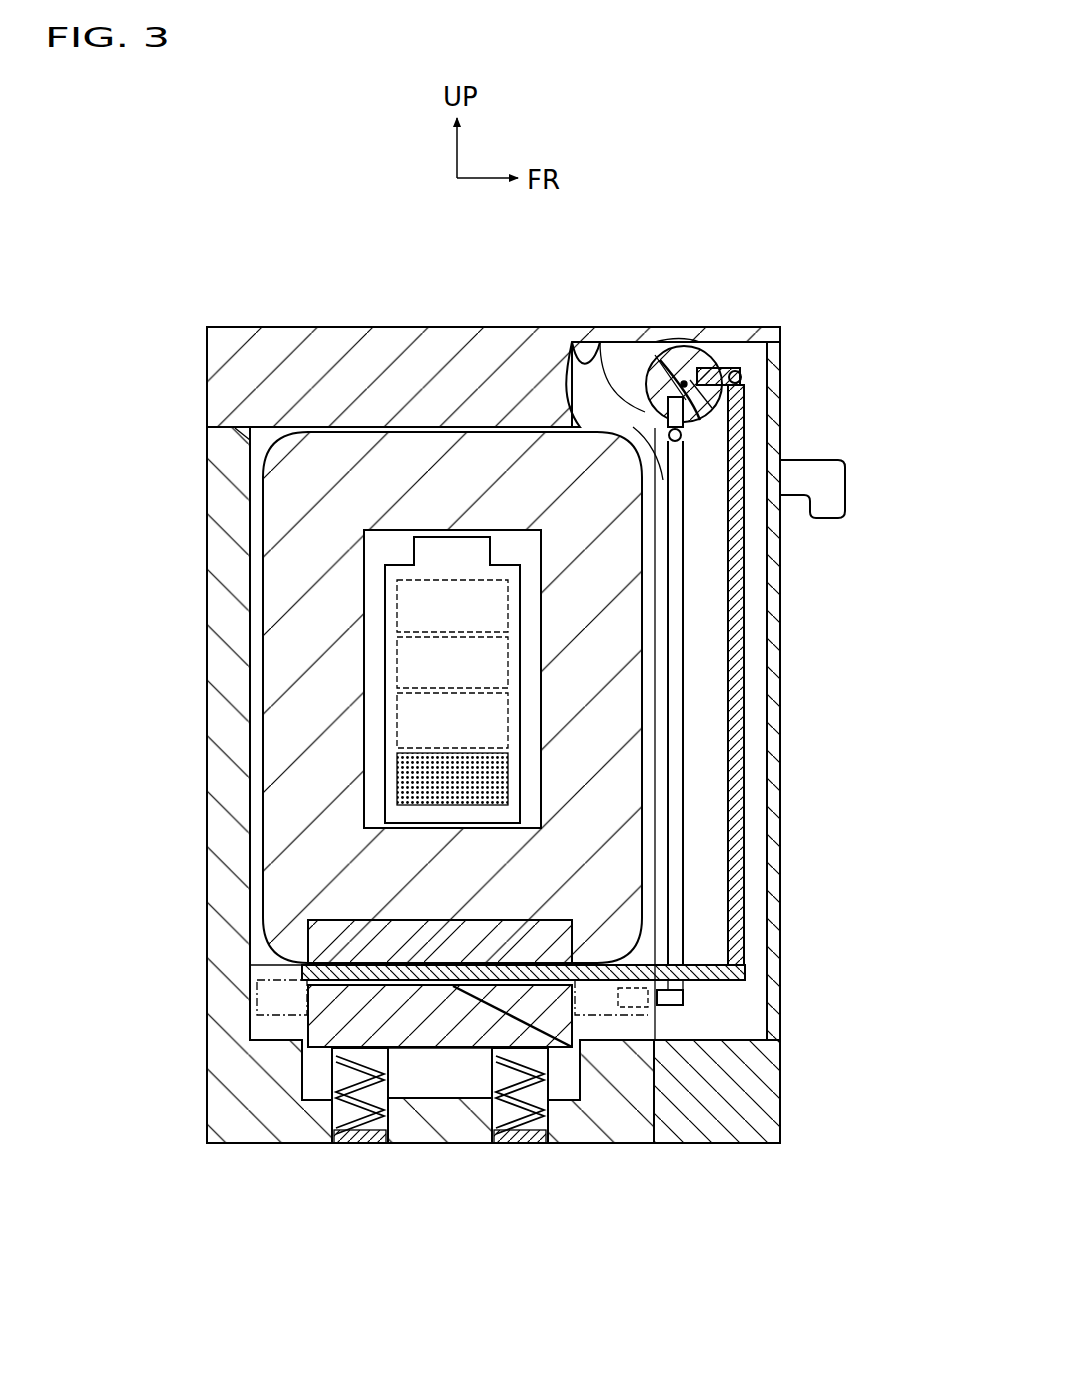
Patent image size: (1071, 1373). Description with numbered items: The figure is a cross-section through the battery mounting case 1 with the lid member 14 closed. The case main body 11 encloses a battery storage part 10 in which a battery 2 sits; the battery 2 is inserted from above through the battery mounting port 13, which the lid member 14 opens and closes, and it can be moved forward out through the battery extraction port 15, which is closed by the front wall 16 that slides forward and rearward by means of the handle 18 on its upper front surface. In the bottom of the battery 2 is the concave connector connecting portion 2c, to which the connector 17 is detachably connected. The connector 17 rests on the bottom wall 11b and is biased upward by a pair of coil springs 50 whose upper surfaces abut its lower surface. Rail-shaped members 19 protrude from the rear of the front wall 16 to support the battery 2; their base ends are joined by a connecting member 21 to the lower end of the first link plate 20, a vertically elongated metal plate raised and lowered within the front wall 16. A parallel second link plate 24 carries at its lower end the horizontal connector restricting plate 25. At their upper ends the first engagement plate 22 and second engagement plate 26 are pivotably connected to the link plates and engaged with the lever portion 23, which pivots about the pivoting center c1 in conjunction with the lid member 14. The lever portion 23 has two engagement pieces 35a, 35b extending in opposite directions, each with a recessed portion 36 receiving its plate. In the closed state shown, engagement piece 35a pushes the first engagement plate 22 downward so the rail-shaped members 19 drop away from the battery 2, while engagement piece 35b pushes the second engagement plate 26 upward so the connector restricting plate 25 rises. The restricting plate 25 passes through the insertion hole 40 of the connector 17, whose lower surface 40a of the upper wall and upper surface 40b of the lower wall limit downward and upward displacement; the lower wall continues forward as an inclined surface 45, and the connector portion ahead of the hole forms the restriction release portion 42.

The battery mounting case 1 is at (742, 240).
The battery 2 is at (286, 422).
The connector connecting portion 2c is at (350, 940).
The battery storage part 10 is at (258, 668).
The case main body 11 is at (200, 562).
The bottom wall 11b is at (247, 1128).
The battery mounting port 13 is at (252, 440).
The lid member 14 is at (305, 318).
The battery extraction port 15 is at (640, 440).
The front wall 16 is at (790, 802).
The connector 17 is at (427, 1058).
The handle 18 is at (848, 488).
The rail-shaped member 19 is at (625, 1010).
The first link plate 20 is at (683, 717).
The connecting member 21 is at (672, 1005).
The first engagement plate 22 is at (662, 342).
The lever portion 23 is at (694, 328).
The second link plate 24 is at (745, 592).
The connector restricting plate 25 is at (300, 997).
The second engagement plate 26 is at (728, 372).
The engagement piece 35a is at (660, 370).
The engagement piece 35b is at (705, 355).
The recessed portion 36 is at (742, 377).
The insertion hole 40 is at (330, 1000).
The lower surface of upper wall 40a is at (380, 972).
The upper surface of lower wall 40b is at (318, 1005).
The restriction release portion 42 is at (607, 1005).
The inclined surface 45 is at (505, 1010).
The coil spring 50 is at (370, 1135).
The pivoting center c1 is at (685, 380).